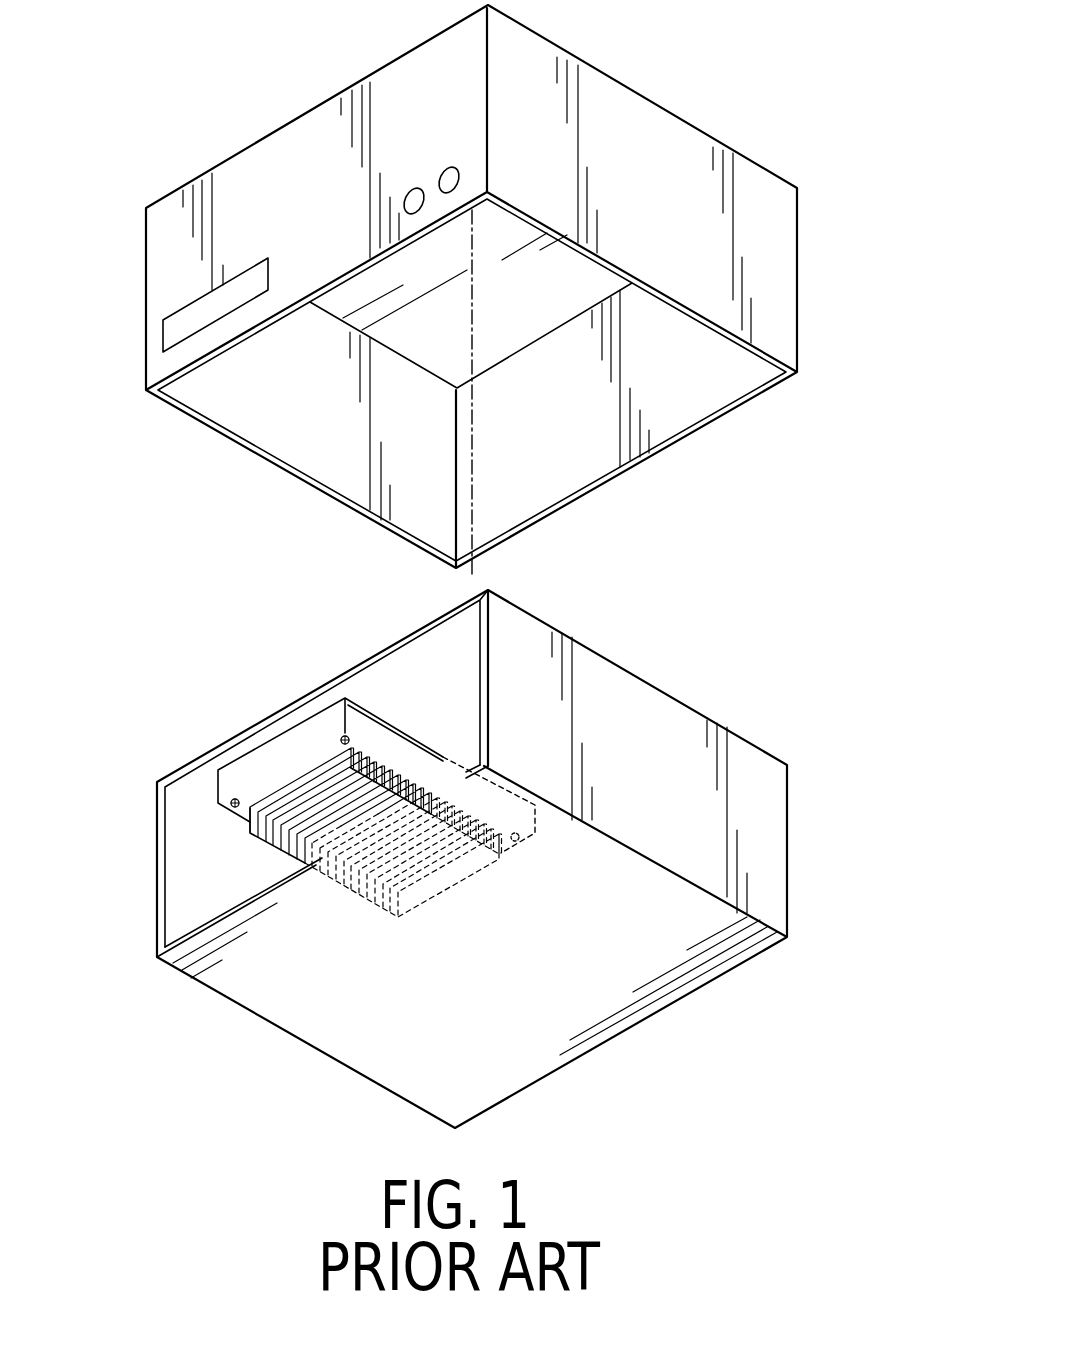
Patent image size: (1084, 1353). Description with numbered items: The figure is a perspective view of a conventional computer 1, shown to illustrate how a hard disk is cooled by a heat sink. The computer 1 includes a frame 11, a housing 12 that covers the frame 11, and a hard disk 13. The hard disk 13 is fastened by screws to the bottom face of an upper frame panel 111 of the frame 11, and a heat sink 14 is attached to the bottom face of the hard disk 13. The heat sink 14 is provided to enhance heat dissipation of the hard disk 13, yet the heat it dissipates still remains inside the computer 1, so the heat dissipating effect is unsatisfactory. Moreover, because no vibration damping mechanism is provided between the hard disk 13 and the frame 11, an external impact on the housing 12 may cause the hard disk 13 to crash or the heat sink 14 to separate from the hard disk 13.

The computer 1 is at (501, 566).
The frame 11 is at (446, 848).
The upper frame panel 111 is at (362, 665).
The housing 12 is at (177, 260).
The hard disk 13 is at (267, 758).
The heat sink 14 is at (263, 813).